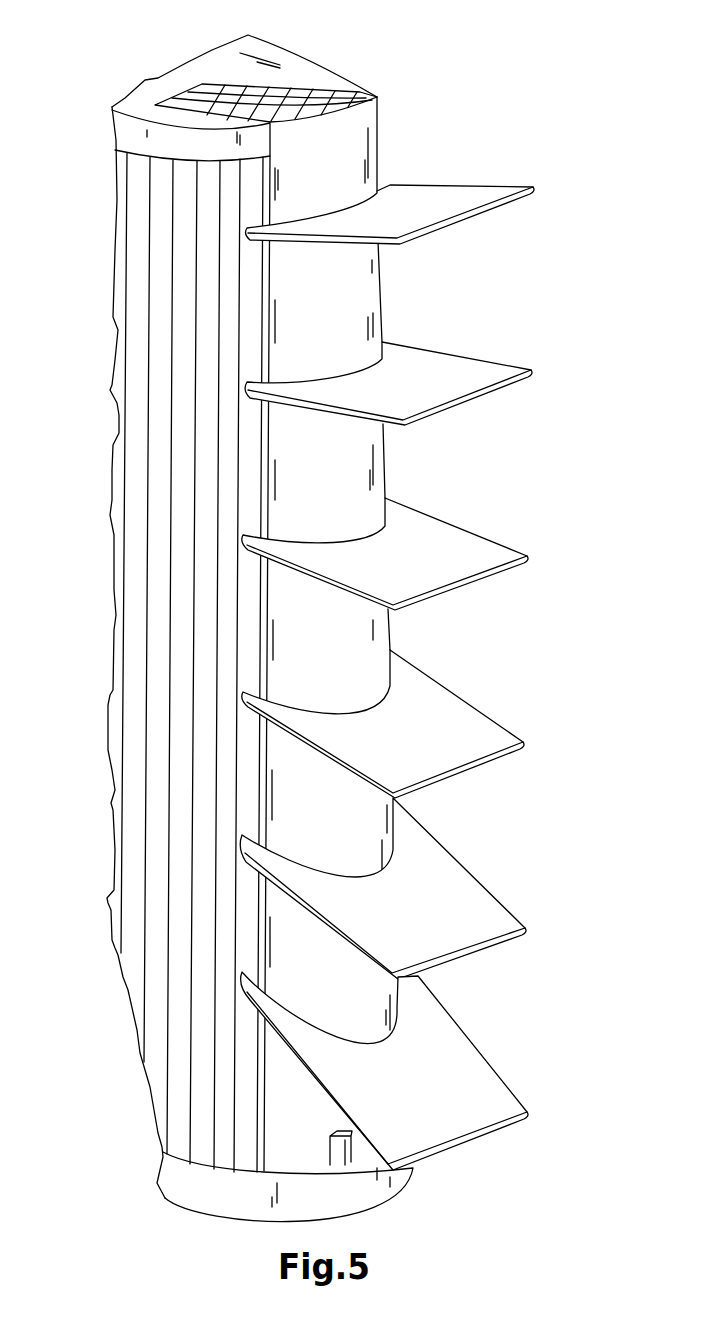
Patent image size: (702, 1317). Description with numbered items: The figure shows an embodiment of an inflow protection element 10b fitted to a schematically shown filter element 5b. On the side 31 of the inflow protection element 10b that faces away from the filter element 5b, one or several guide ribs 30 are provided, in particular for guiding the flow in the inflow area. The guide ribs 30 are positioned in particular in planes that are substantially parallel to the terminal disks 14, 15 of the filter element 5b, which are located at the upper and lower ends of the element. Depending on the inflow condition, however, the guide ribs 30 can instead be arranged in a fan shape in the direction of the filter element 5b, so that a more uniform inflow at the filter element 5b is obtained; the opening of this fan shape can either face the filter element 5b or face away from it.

The filter element 5b is at (110, 970).
The terminal disk 14 is at (313, 72).
The inflow protection element 10b is at (365, 278).
The guide ribs 30 is at (488, 393).
The side facing away from the filter element 31 is at (352, 630).
The terminal disk 15 is at (372, 1183).